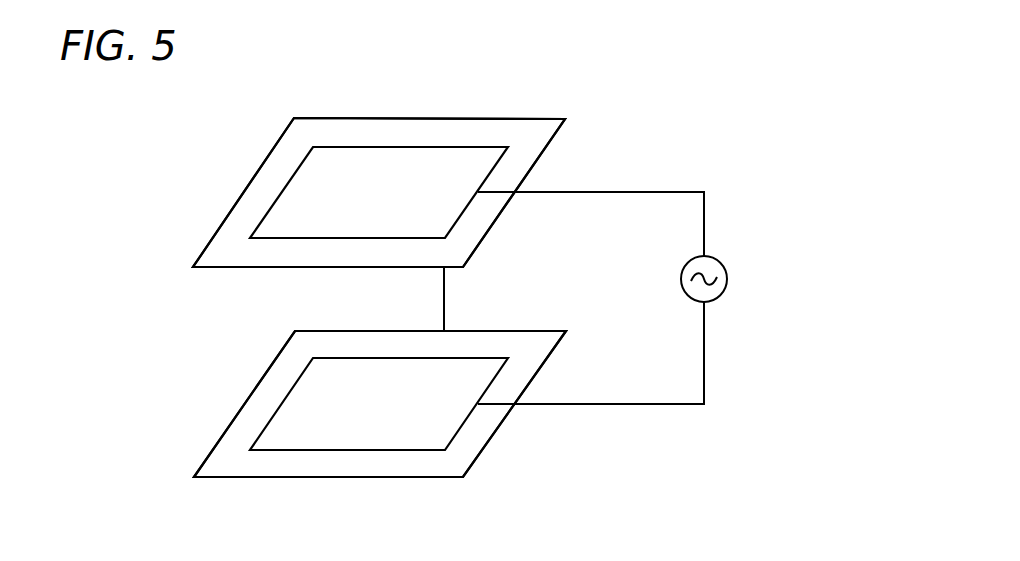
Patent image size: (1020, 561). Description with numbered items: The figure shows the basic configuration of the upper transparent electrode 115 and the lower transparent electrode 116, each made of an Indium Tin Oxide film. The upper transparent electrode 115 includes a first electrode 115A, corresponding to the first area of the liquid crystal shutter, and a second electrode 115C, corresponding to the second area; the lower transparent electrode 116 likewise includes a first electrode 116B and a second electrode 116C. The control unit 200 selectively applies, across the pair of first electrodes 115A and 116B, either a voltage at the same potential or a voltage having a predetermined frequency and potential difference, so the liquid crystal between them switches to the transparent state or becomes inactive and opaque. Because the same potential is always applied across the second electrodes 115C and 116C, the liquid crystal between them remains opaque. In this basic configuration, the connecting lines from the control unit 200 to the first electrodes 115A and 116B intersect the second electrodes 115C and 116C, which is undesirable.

The upper transparent electrode 115 is at (252, 152).
The first electrode 115A is at (397, 157).
The second electrode 115C is at (537, 123).
The lower transparent electrode 116 is at (244, 374).
The first electrode 116B is at (343, 368).
The second electrode 116C is at (477, 431).
The control unit 200 is at (715, 258).